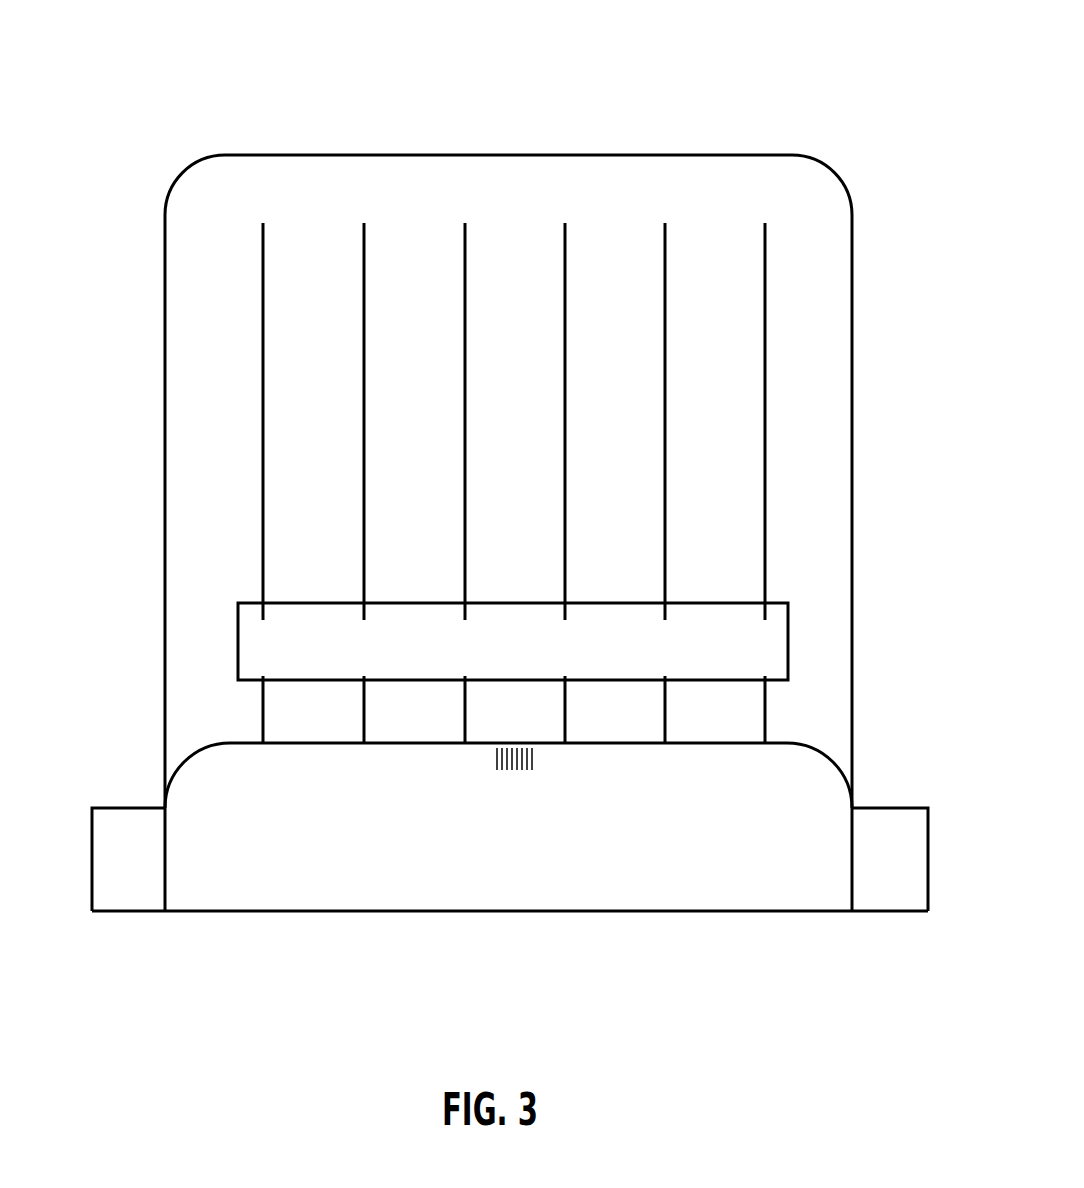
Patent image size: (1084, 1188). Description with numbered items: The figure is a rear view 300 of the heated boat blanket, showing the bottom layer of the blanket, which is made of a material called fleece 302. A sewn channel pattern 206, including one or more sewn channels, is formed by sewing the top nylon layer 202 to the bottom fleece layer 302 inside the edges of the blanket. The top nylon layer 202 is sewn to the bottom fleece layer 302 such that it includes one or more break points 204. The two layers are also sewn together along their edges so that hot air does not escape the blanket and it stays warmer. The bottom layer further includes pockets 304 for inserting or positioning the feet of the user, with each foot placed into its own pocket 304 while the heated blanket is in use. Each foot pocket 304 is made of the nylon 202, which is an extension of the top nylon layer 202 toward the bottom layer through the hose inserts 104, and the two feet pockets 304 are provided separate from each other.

The rear view 300 is at (216, 130).
The fleece 302 is at (804, 301).
The hose inserts 104 is at (107, 832).
The top nylon layer 202 is at (823, 795).
The sewn channel pattern 206 is at (263, 425).
The break points 204 is at (620, 602).
The pockets 304 is at (403, 743).